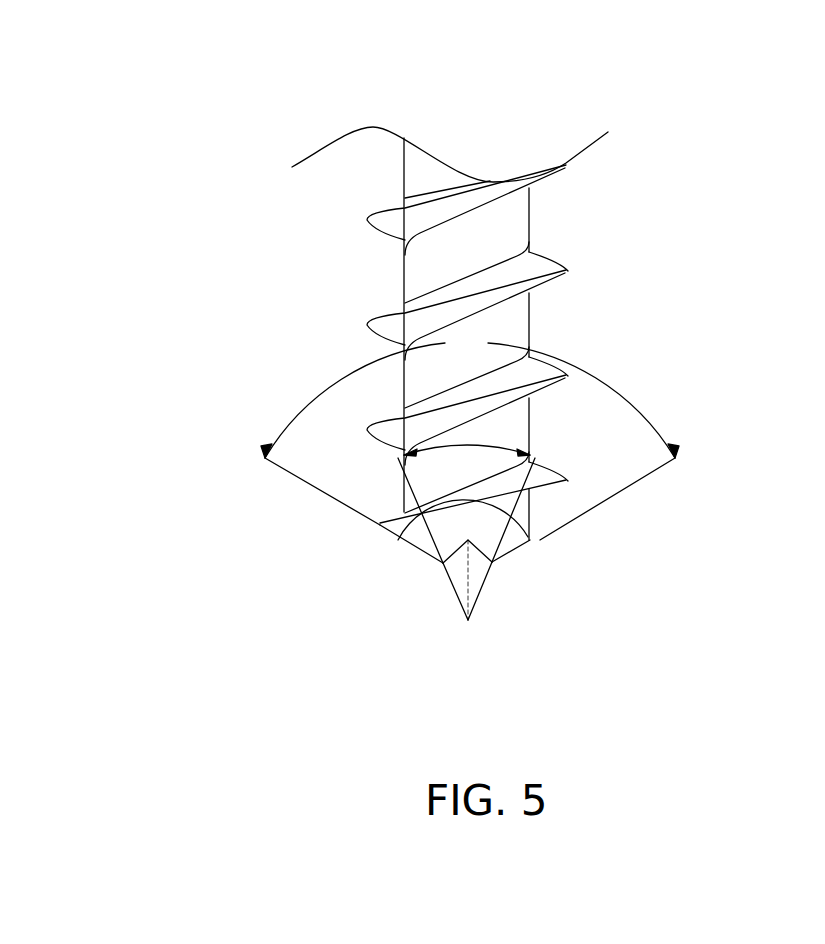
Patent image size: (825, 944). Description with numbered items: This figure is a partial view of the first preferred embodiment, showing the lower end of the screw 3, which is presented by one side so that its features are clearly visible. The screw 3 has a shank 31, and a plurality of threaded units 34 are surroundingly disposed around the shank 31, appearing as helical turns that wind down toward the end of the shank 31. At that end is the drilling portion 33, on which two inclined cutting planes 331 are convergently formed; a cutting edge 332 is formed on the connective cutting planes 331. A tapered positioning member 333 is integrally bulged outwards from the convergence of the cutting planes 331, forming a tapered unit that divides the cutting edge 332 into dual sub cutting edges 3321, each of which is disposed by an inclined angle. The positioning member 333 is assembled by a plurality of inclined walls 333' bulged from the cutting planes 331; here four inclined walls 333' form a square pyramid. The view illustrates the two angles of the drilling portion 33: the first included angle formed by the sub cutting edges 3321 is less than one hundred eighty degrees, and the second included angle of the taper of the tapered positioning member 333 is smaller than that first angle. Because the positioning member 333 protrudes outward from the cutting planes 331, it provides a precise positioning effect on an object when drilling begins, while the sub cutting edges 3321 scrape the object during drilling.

The screw 3 is at (247, 191).
The shank 31 is at (403, 262).
The threaded units 34 is at (537, 272).
The drilling portion 33 is at (547, 539).
The inclined cutting planes 331 is at (500, 538).
The cutting edge 332 is at (397, 550).
The sub cutting edges 3321 is at (425, 553).
The tapered positioning member 333 is at (498, 643).
The inclined walls 333' is at (555, 617).